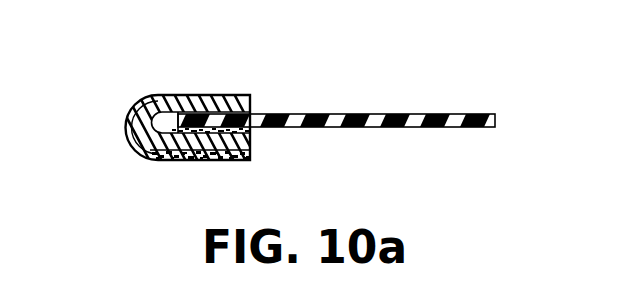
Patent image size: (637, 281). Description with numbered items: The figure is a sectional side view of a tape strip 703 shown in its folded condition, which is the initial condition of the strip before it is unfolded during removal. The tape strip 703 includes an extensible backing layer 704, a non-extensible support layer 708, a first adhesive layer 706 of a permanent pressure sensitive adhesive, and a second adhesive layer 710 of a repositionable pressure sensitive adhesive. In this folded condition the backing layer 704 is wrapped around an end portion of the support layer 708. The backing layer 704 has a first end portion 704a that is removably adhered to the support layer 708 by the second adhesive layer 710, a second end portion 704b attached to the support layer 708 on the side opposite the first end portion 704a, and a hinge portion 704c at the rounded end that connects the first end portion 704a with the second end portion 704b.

The tape strip 703 is at (450, 60).
The extensible backing layer 704 is at (185, 108).
The first end portion 704a is at (229, 160).
The second end portion 704b is at (218, 96).
The hinge portion 704c is at (130, 118).
The first adhesive layer 706 is at (172, 160).
The non-extensible support layer 708 is at (496, 116).
The second adhesive layer 710 is at (250, 130).